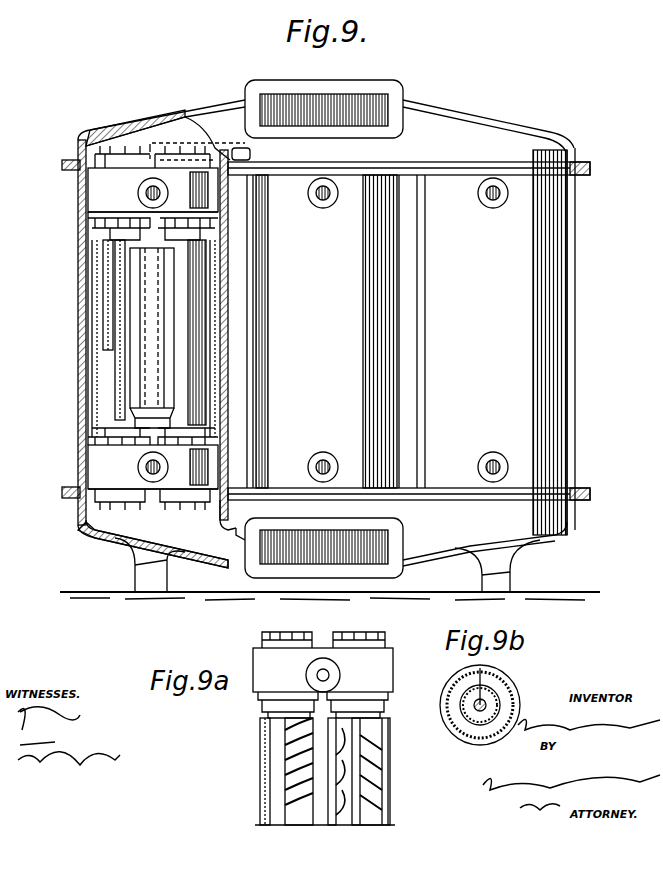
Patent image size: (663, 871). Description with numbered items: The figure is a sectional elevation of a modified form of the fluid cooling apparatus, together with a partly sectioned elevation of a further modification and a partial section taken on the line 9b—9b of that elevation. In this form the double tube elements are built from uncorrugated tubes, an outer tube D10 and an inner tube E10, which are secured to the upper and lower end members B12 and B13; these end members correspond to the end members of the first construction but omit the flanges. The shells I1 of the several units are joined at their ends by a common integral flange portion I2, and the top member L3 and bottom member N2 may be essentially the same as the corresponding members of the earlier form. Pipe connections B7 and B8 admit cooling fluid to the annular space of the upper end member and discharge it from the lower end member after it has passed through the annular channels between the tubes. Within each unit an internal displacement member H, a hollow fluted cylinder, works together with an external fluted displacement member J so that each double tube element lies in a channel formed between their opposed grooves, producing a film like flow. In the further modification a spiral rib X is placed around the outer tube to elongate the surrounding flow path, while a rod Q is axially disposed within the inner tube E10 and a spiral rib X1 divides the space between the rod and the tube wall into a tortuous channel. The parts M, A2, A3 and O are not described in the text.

In FIG. 9, the upper conduit box M is at (355, 102).
In FIG. 9, the top member L3 is at (468, 122).
In FIG. 9, the common integral flange portion I2 is at (360, 176).
In FIG. 9, the shell I1 is at (92, 405).
In FIG. 9, the cylinder A2 is at (230, 296).
In FIG. 9, the cylinder A3 is at (323, 331).
In FIG. 9, the pipe connection B7 is at (146, 193).
In FIG. 9, the pipe connection B8 is at (146, 467).
In FIG. 9, the end member B12 is at (100, 182).
In FIG. 9, the end member B13 is at (95, 455).
In FIG. 9, the displacement member J is at (90, 318).
In FIG. 9, the internal displacement member H is at (170, 318).
In FIG. 9, the inner tube E10 is at (106, 340).
In FIG. 9a, the inner tube E10 is at (270, 788).
In FIG. 9b, the inner tube E10 is at (462, 722).
In FIG. 9, the outer tube D10 is at (102, 388).
In FIG. 9a, the outer tube D10 is at (262, 765).
In FIG. 9b, the outer tube D10 is at (500, 677).
In FIG. 9, the lower conduit box O is at (265, 558).
In FIG. 9, the bottom member N2 is at (472, 540).
In FIG. 9a, the spiral rib X is at (262, 745).
In FIG. 9b, the spiral rib X is at (482, 668).
In FIG. 9a, the spiral rib X1 is at (388, 800).
In FIG. 9b, the spiral rib X1 is at (470, 694).
In FIG. 9a, the rod Q is at (372, 745).
In FIG. 9b, the rod Q is at (486, 705).
In FIG. 9a, the section line 9b is at (392, 760).